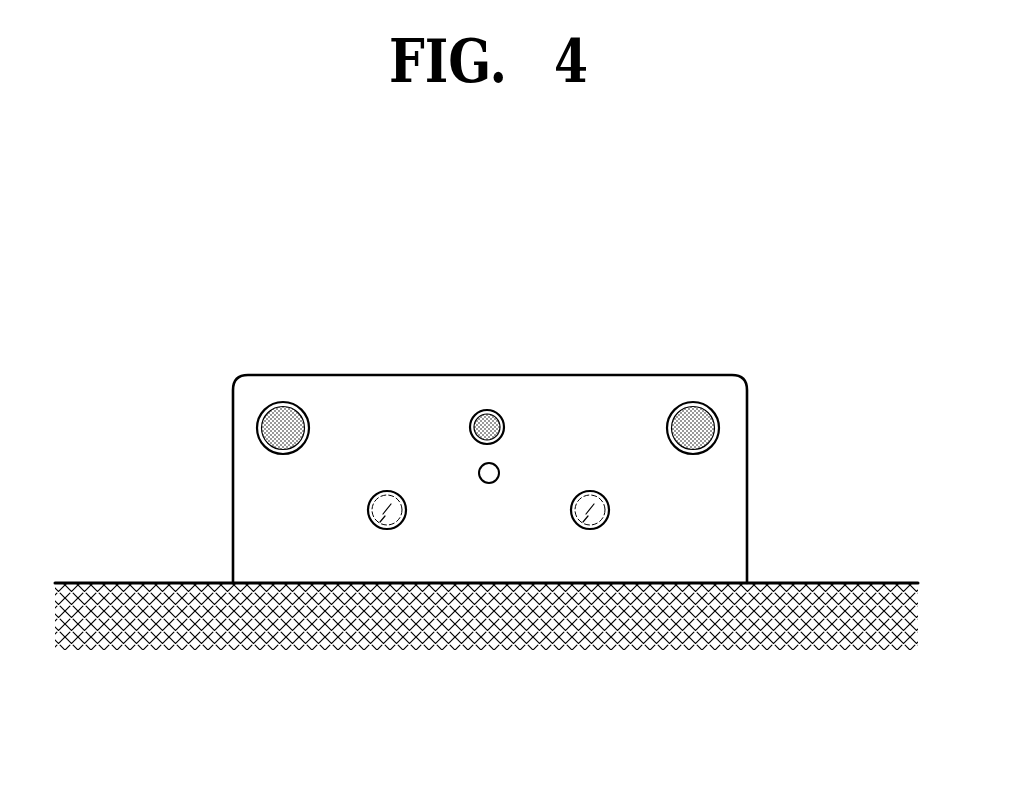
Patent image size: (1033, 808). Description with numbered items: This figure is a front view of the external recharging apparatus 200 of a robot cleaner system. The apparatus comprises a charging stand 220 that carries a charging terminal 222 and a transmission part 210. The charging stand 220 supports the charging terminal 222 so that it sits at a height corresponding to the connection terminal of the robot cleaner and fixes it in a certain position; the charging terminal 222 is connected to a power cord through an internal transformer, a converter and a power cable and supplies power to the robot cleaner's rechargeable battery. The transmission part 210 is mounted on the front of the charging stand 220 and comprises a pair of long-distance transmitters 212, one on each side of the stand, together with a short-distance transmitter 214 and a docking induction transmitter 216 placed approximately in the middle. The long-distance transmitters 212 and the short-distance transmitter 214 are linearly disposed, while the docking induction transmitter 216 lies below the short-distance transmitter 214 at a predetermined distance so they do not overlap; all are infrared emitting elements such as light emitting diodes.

The external recharging apparatus 200 is at (732, 258).
The transmission part 210 is at (262, 323).
The long-distance transmitters 212 is at (283, 418).
The short-distance transmitter 214 is at (483, 418).
The docking induction transmitter 216 is at (493, 473).
The charging stand 220 is at (243, 490).
The charging terminal 222 is at (588, 514).